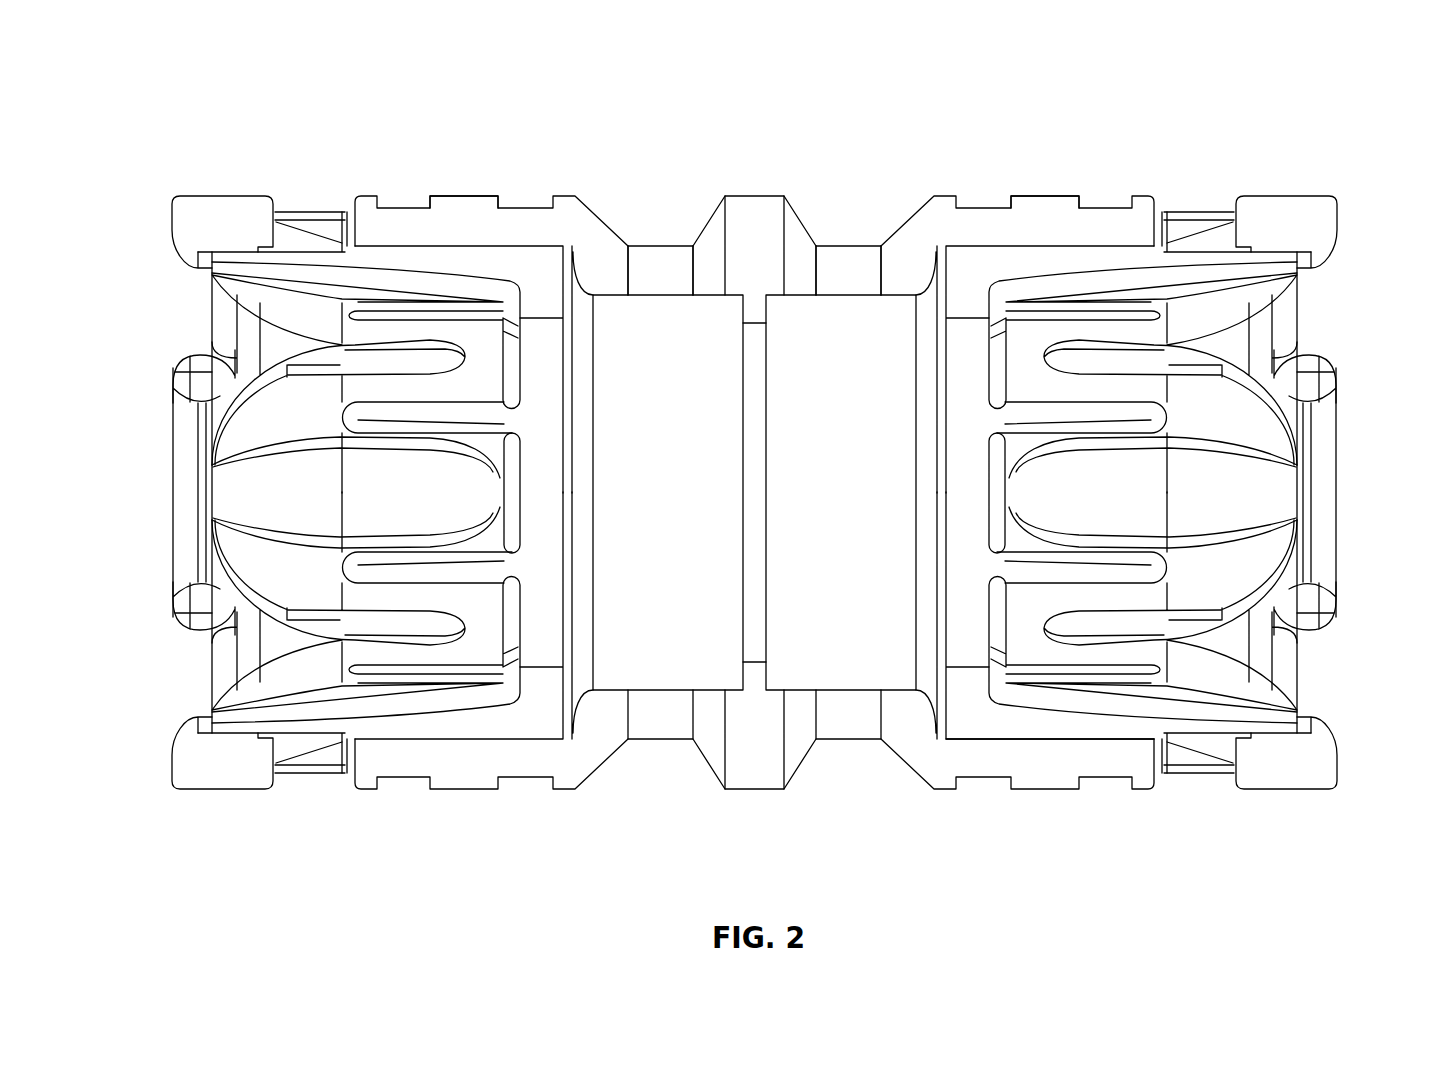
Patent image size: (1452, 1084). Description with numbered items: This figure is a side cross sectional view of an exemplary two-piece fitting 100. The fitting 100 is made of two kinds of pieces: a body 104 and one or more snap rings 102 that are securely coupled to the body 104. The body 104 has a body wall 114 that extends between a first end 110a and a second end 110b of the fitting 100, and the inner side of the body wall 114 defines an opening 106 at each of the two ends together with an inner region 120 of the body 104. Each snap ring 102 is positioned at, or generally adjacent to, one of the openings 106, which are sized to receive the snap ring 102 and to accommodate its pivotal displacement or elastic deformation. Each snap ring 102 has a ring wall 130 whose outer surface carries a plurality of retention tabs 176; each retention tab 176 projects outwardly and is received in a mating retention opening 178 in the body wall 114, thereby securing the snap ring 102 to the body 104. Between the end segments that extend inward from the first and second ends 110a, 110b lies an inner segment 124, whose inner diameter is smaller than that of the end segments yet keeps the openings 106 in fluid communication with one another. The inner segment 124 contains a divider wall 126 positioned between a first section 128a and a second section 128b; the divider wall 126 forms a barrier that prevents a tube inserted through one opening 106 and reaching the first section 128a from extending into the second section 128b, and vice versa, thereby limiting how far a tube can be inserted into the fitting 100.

The two-piece fitting 100 is at (1062, 98).
The snap ring 102 is at (497, 262).
The body 104 is at (752, 212).
The opening 106 is at (220, 342).
The first end 110a is at (170, 538).
The second end 110b is at (1328, 503).
The body wall 114 is at (913, 753).
The inner region 120 is at (685, 484).
The inner segment 124 is at (632, 691).
The divider wall 126 is at (767, 645).
The first section 128a is at (635, 296).
The second section 128b is at (828, 296).
The ring wall 130 is at (460, 262).
The retention tab 176 is at (298, 223).
The retention opening 178 is at (287, 205).